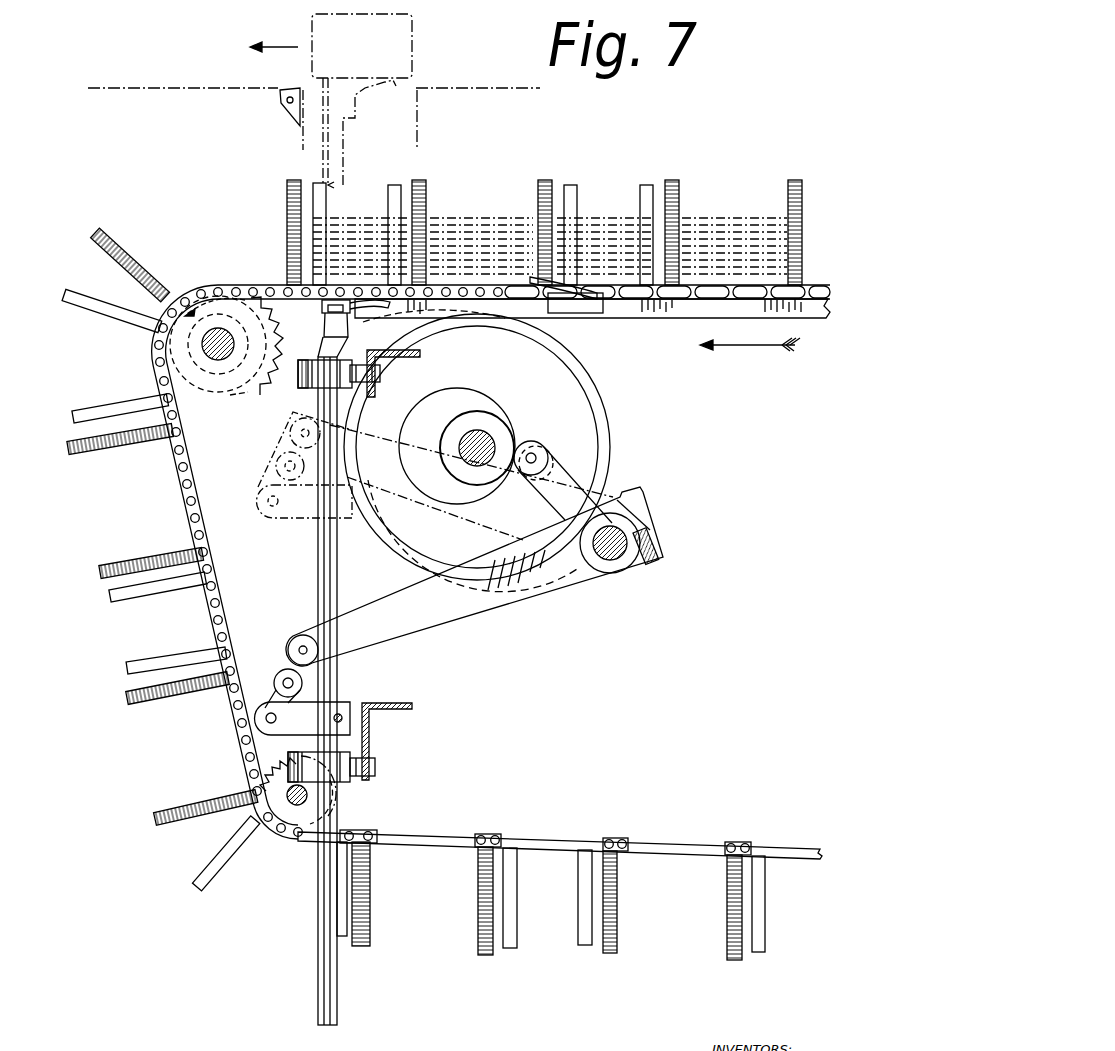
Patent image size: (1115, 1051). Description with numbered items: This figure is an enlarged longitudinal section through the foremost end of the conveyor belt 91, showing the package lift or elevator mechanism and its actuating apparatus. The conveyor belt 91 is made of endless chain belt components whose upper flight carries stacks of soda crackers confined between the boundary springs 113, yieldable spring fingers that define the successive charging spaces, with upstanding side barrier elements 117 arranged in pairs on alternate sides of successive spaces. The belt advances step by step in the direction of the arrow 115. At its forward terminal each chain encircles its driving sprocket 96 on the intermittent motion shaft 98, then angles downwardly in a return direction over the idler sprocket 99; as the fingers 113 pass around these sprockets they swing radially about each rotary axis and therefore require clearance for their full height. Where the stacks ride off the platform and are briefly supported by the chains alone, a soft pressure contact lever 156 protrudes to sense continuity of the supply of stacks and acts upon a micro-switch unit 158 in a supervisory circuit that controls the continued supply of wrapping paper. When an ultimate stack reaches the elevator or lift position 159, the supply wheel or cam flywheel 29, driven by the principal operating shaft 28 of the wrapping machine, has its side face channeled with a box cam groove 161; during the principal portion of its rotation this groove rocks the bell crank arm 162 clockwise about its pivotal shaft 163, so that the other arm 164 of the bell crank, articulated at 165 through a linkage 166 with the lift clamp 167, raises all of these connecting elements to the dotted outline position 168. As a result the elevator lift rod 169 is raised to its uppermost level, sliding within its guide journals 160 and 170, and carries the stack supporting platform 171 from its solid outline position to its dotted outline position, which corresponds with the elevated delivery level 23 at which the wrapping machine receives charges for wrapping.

The elevated horizontal work level 23 is at (152, 88).
The principal operating shaft 28 is at (465, 437).
The cam flywheel 29 is at (610, 437).
The conveyor belt 91 is at (517, 837).
The driving sprocket wheel 96 is at (228, 400).
The intermittent motion shaft 98 is at (221, 334).
The idler sprocket 99 is at (290, 828).
The boundary springs 113 is at (112, 232).
The arrow 115 is at (753, 346).
The side barrier element 117 is at (389, 198).
The soft pressure contact lever 156 is at (545, 294).
The micro-switch unit 158 is at (600, 306).
The elevator or lift position 159 is at (398, 164).
The guide journal 160 is at (355, 782).
The box cam groove 161 is at (540, 402).
The bell crank arm 162 is at (575, 482).
The pivotal shaft 163 is at (613, 552).
The other arm of the bell crank 164 is at (463, 527).
The articulation 165 is at (303, 645).
The linkage 166 is at (286, 680).
The lift clamp 167 is at (328, 706).
The dotted outline position 168 is at (262, 512).
The elevator lift rod 169 is at (349, 143).
The guide journal 170 is at (308, 389).
The stack supporting platform 171 is at (392, 84).